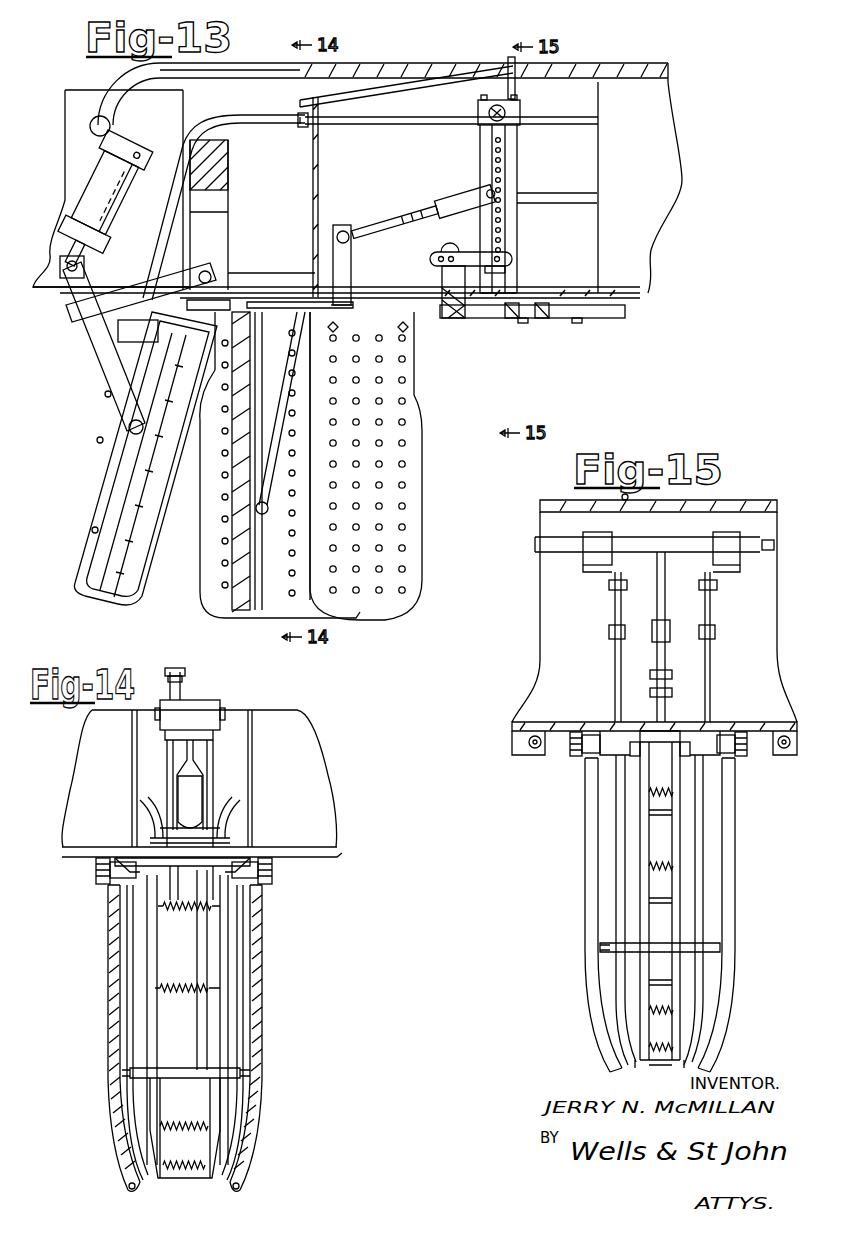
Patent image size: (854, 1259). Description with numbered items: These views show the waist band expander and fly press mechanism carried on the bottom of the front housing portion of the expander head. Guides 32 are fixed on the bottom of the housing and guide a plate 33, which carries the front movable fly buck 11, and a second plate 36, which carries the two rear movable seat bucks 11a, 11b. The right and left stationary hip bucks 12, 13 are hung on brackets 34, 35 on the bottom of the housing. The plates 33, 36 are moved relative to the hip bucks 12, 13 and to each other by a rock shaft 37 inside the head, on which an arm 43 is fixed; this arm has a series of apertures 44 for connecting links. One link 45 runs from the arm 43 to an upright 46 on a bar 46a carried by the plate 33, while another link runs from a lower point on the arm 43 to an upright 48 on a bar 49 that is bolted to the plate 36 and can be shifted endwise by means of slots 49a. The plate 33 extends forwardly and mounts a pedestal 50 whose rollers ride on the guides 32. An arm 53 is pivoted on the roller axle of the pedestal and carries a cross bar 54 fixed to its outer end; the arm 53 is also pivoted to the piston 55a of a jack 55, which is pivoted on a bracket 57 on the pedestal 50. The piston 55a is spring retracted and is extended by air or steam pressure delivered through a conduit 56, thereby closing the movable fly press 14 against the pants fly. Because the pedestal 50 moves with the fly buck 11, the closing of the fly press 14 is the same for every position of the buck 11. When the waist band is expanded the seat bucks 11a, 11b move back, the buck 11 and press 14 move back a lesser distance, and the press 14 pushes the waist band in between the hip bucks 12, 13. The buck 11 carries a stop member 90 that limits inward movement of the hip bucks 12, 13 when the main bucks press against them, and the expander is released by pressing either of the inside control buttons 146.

In FIG. 13, the front movable fly buck 11 is at (240, 612).
In FIG. 14, the front movable fly buck 11 is at (186, 961).
In FIG. 15, the front movable fly buck 11 is at (628, 813).
In FIG. 15, the rear movable seat buck 11a is at (636, 1062).
In FIG. 13, the rear movable seat buck 11b is at (400, 606).
In FIG. 15, the rear movable seat buck 11b is at (680, 1062).
In FIG. 14, the right stationary hip buck 12 is at (108, 1088).
In FIG. 15, the right stationary hip buck 12 is at (586, 930).
In FIG. 14, the left stationary hip buck 13 is at (256, 1072).
In FIG. 15, the left stationary hip buck 13 is at (724, 996).
In FIG. 13, the movable fly press 14 is at (100, 474).
In FIG. 14, the movable fly press 14 is at (126, 956).
In FIG. 15, the movable fly press 14 is at (618, 855).
In FIG. 13, the guides 32 is at (600, 318).
In FIG. 14, the guides 32 is at (137, 862).
In FIG. 15, the guides 32 is at (602, 724).
In FIG. 13, the plate 33 is at (275, 298).
In FIG. 14, the plate 33 is at (187, 883).
In FIG. 14, the bracket 34 is at (274, 880).
In FIG. 15, the bracket 34 is at (740, 758).
In FIG. 14, the bracket 35 is at (100, 882).
In FIG. 15, the bracket 35 is at (572, 756).
In FIG. 13, the second plate 36 is at (600, 303).
In FIG. 15, the second plate 36 is at (689, 722).
In FIG. 13, the rock shaft 37 is at (485, 121).
In FIG. 15, the rock shaft 37 is at (636, 553).
In FIG. 13, the arm 43 is at (507, 162).
In FIG. 15, the arm 43 is at (660, 588).
In FIG. 13, the apertures 44 is at (494, 177).
In FIG. 13, the link 45 is at (430, 211).
In FIG. 15, the link 45 is at (652, 637).
In FIG. 13, the upright 46 is at (353, 256).
In FIG. 13, the bar 46a is at (354, 300).
In FIG. 13, the upright 48 is at (446, 274).
In FIG. 15, the upright 48 is at (657, 707).
In FIG. 13, the bar 49 is at (465, 320).
In FIG. 15, the bar 49 is at (635, 757).
In FIG. 13, the slots 49a is at (540, 320).
In FIG. 13, the pedestal 50 is at (229, 204).
In FIG. 14, the pedestal 50 is at (176, 767).
In FIG. 13, the arm 53 is at (141, 292).
In FIG. 14, the arm 53 is at (205, 820).
In FIG. 13, the cross bar 54 is at (98, 348).
In FIG. 13, the jack 55 is at (116, 204).
In FIG. 14, the jack 55 is at (198, 800).
In FIG. 13, the piston 55a is at (84, 263).
In FIG. 13, the conduit 56 is at (118, 80).
In FIG. 14, the conduit 56 is at (181, 672).
In FIG. 13, the bracket 57 is at (162, 145).
In FIG. 14, the bracket 57 is at (213, 710).
In FIG. 14, the stop member 90 is at (186, 1123).
In FIG. 15, the stop member 90 is at (662, 958).
In FIG. 15, the inside control buttons 146 is at (528, 744).